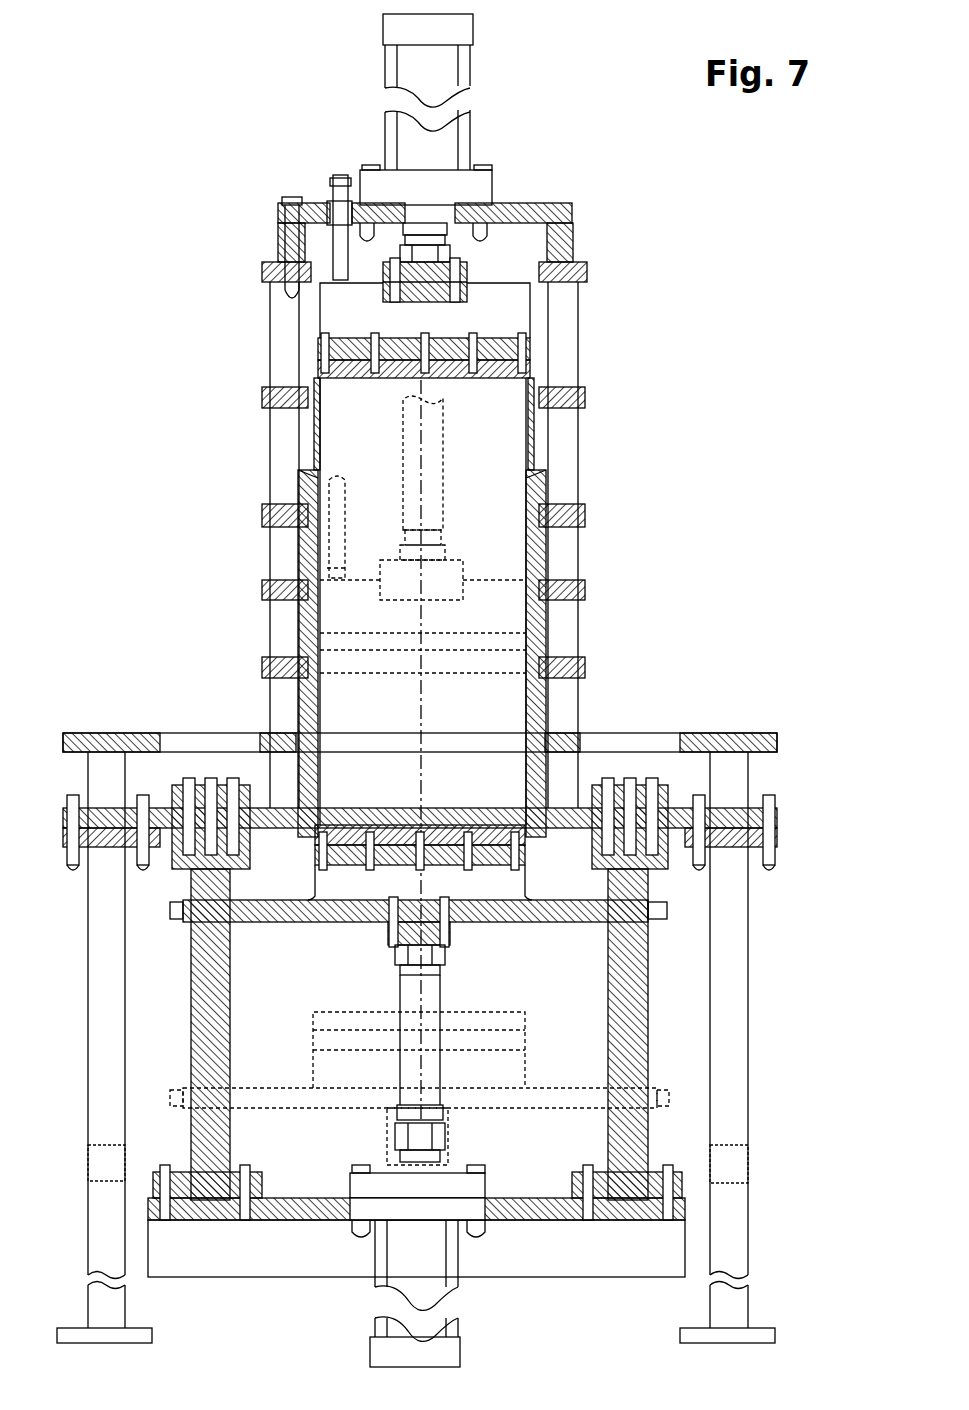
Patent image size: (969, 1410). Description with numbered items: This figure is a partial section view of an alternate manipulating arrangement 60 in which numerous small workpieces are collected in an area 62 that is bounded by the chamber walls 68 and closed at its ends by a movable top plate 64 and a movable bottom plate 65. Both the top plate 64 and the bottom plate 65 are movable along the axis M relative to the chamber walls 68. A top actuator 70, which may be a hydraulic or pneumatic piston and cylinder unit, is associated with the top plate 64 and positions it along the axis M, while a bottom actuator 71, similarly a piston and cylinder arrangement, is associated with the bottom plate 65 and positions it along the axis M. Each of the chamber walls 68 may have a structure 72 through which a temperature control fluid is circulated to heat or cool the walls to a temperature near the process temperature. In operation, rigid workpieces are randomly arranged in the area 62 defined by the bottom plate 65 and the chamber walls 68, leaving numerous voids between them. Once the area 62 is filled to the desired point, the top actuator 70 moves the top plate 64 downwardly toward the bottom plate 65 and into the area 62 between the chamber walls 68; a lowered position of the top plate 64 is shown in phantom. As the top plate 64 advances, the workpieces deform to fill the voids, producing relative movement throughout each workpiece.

The alternate manipulating arrangement 60 is at (198, 452).
The area 62 is at (423, 580).
The top plate 64 is at (530, 368).
The bottom plate 65 is at (650, 908).
The chamber walls 68 is at (296, 642).
The top actuator 70 is at (443, 148).
The bottom actuator 71 is at (393, 1315).
The structure 72 is at (296, 561).
The axis M is at (418, 748).